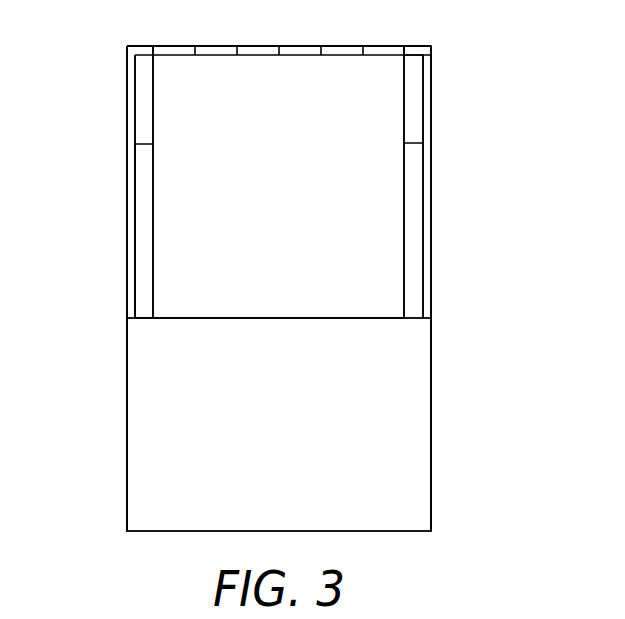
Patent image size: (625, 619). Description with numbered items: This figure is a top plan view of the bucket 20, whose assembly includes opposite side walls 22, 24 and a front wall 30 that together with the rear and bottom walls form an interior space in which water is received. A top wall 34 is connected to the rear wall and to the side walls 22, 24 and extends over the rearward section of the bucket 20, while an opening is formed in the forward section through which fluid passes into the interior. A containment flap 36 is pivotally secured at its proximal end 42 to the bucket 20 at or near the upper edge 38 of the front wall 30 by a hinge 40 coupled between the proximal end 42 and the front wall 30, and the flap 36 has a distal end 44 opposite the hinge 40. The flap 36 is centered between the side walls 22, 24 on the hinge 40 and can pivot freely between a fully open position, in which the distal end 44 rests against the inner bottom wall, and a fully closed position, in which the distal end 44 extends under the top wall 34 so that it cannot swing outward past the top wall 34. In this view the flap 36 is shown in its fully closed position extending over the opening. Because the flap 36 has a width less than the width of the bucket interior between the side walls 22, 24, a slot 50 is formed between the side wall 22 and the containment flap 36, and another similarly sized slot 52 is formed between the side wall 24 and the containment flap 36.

The bucket 20 is at (79, 409).
The side wall 22 is at (428, 124).
The side wall 24 is at (131, 226).
The front wall 30 is at (412, 98).
The top wall 34 is at (406, 383).
The containment flap 36 is at (370, 218).
The upper edge 38 is at (412, 46).
The hinge 40 is at (248, 46).
The proximal end 42 is at (182, 82).
The distal end 44 is at (177, 306).
The slot 50 is at (413, 192).
The slot 52 is at (147, 175).